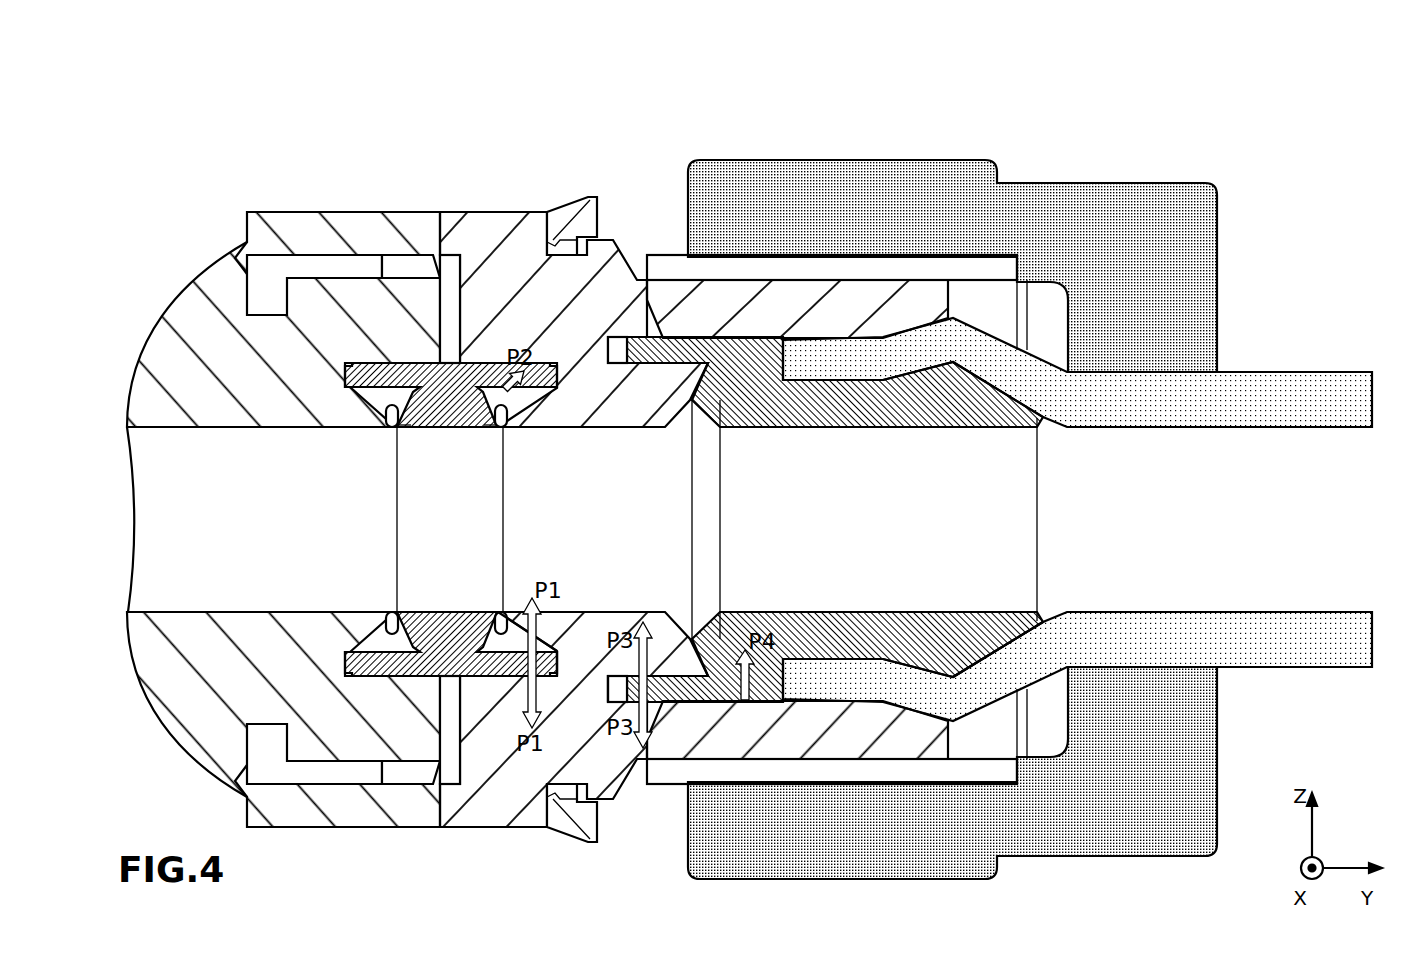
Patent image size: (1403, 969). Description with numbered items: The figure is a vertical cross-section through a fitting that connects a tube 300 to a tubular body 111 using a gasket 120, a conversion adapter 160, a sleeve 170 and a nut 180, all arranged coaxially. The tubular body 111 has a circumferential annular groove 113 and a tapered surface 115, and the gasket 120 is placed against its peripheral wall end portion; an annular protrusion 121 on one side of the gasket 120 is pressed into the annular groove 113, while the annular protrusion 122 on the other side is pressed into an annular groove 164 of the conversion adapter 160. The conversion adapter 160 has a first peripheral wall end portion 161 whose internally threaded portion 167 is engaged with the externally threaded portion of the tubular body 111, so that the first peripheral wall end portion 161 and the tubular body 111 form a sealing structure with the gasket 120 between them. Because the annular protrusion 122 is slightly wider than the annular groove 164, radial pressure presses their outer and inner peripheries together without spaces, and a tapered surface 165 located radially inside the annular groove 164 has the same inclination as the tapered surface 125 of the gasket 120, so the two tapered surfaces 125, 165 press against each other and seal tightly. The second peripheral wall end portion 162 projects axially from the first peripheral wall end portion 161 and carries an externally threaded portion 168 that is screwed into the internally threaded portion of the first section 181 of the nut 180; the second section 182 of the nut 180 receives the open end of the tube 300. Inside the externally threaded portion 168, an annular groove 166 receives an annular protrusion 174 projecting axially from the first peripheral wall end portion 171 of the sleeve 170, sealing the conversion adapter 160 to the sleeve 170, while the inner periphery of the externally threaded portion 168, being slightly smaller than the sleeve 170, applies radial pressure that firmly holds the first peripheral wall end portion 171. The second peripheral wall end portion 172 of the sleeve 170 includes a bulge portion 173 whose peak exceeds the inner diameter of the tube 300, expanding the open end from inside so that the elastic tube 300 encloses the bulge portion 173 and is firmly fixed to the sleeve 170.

The tubular body 111 is at (301, 271).
The annular groove 113 is at (345, 365).
The tapered surface 115 is at (410, 430).
The gasket 120 is at (450, 363).
The annular protrusion 121 is at (380, 360).
The annular protrusion 122 is at (500, 672).
The tapered surface 125 is at (510, 418).
The conversion adapter 160 is at (506, 211).
The first peripheral wall end portion 161 is at (247, 147).
The second peripheral wall end portion 162 is at (950, 147).
The annular groove 164 is at (557, 678).
The tapered surface 165 is at (492, 432).
The annular groove 166 is at (640, 702).
The internally threaded portion 167 is at (340, 766).
The externally threaded portion 168 is at (850, 760).
The sleeve 170 is at (688, 336).
The first peripheral wall end portion 171 is at (627, 442).
The second peripheral wall end portion 172 is at (783, 442).
The bulge portion 173 is at (968, 722).
The annular protrusion 174 is at (680, 703).
The nut 180 is at (1153, 182).
The first section 181 is at (1015, 70).
The second section 182 is at (1217, 70).
The tube 300 is at (990, 318).